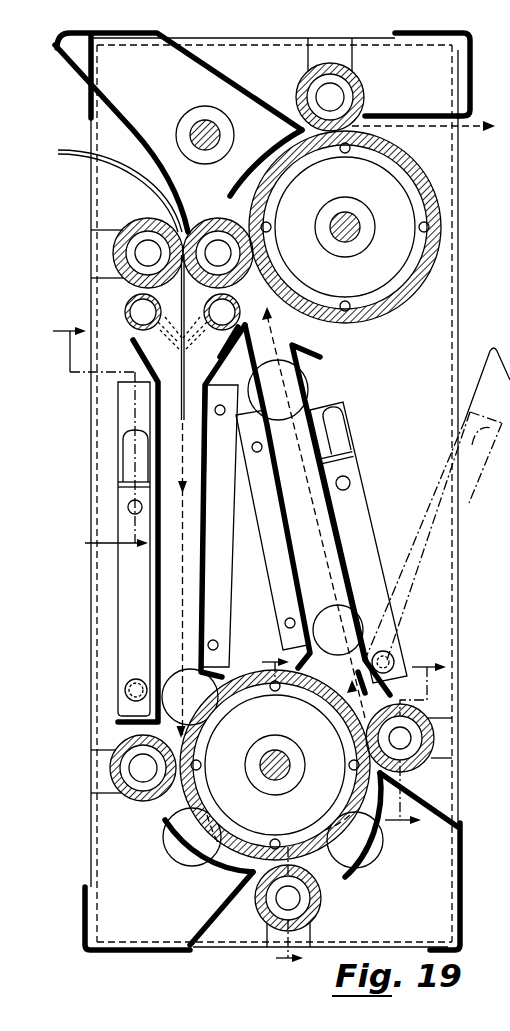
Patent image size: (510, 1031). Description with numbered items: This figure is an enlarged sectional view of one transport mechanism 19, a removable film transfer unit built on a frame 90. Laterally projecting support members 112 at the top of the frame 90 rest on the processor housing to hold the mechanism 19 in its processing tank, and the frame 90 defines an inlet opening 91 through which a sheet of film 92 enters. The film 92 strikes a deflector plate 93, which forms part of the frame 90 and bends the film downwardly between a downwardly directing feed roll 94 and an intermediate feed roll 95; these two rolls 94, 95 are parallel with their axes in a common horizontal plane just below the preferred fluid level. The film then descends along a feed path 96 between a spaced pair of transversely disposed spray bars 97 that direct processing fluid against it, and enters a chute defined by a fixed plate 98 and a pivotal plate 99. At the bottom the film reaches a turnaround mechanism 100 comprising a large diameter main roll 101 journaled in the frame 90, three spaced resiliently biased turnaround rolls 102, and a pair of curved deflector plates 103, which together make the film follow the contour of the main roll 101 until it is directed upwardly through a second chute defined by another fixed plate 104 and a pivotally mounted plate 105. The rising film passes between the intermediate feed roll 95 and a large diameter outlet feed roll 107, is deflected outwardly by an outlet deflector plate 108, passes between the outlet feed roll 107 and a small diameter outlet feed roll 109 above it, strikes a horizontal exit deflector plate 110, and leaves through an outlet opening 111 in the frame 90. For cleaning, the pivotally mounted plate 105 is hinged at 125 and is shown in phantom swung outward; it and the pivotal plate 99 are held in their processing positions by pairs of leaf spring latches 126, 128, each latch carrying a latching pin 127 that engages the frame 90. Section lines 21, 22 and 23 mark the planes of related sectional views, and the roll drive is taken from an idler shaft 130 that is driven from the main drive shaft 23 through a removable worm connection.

The transport mechanism 19 is at (466, 273).
The section line 21- 21 is at (269, 818).
The section line 22- 22 is at (415, 744).
The main drive shaft 23 is at (99, 431).
The frame 90 is at (255, 38).
The inlet opening 91 is at (103, 135).
The sheet of film 92 is at (153, 188).
The deflector plate 93 is at (122, 115).
The downwardly directing feed roll 94 is at (115, 247).
The intermediate feed roll 95 is at (213, 217).
The feed path 96 is at (180, 583).
The spray bars 97 is at (128, 328).
The fixed plate 98 is at (222, 545).
The pivotal plate 99 is at (157, 407).
The turnaround mechanism 100 is at (152, 843).
The main roll 101 is at (317, 862).
The turnaround rolls 102 is at (150, 804).
The curved deflector plates 103 is at (217, 865).
The fixed plate 104 is at (293, 565).
The pivotally mounted plate 105 is at (403, 550).
The outlet feed roll 107 is at (435, 188).
The outlet deflector plate 108 is at (260, 148).
The small diameter outlet feed roll 109 is at (352, 80).
The exit deflector plate 110 is at (398, 115).
The outlet opening 111 is at (448, 156).
The support members 112 is at (397, 32).
The hinge mounting 125 is at (386, 652).
The leaf spring latches 126 is at (337, 435).
The latching pin 127 is at (127, 507).
The leaf spring latches 128 is at (127, 453).
The idler shaft 130 is at (205, 120).